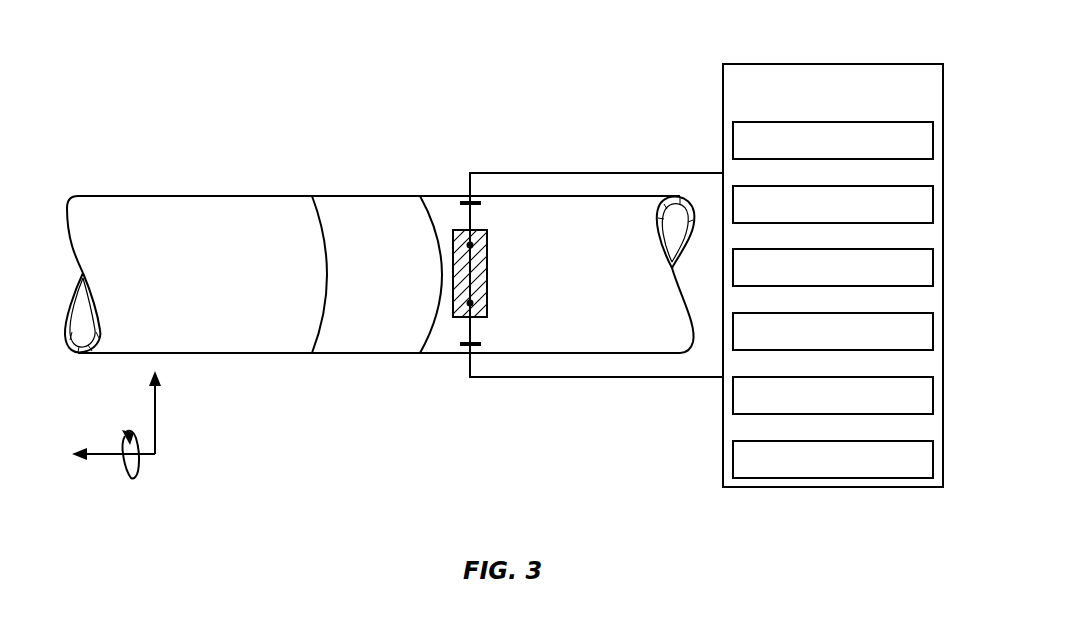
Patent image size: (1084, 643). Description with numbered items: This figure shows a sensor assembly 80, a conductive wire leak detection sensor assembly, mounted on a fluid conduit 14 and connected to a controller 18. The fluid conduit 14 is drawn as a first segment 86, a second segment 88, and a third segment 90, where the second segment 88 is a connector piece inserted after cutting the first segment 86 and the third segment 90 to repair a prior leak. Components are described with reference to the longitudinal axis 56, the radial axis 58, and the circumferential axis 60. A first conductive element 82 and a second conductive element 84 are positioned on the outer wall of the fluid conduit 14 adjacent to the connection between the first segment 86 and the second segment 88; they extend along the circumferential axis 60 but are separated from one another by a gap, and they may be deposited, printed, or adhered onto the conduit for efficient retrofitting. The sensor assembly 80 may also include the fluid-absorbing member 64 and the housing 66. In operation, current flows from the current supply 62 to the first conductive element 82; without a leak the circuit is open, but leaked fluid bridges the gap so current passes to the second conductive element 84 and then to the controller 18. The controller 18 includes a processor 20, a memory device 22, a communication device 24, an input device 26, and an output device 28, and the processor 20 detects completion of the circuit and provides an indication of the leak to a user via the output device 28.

The sensor assembly 80 is at (345, 56).
The third segment 90 is at (241, 196).
The second segment 88 is at (365, 196).
The first segment 86 is at (603, 196).
The fluid conduit 14 is at (522, 152).
The housing 66 is at (463, 200).
The fluid-absorbing member 64 is at (488, 270).
The second conductive element 84 is at (471, 224).
The first conductive element 82 is at (471, 338).
The controller 18 is at (835, 64).
The processor 20 is at (835, 122).
The memory device 22 is at (835, 186).
The communication device 24 is at (835, 249).
The input device 26 is at (835, 313).
The output device 28 is at (835, 377).
The current supply 62 is at (835, 441).
The longitudinal axis 56 is at (105, 453).
The radial axis 58 is at (156, 412).
The circumferential axis 60 is at (133, 478).